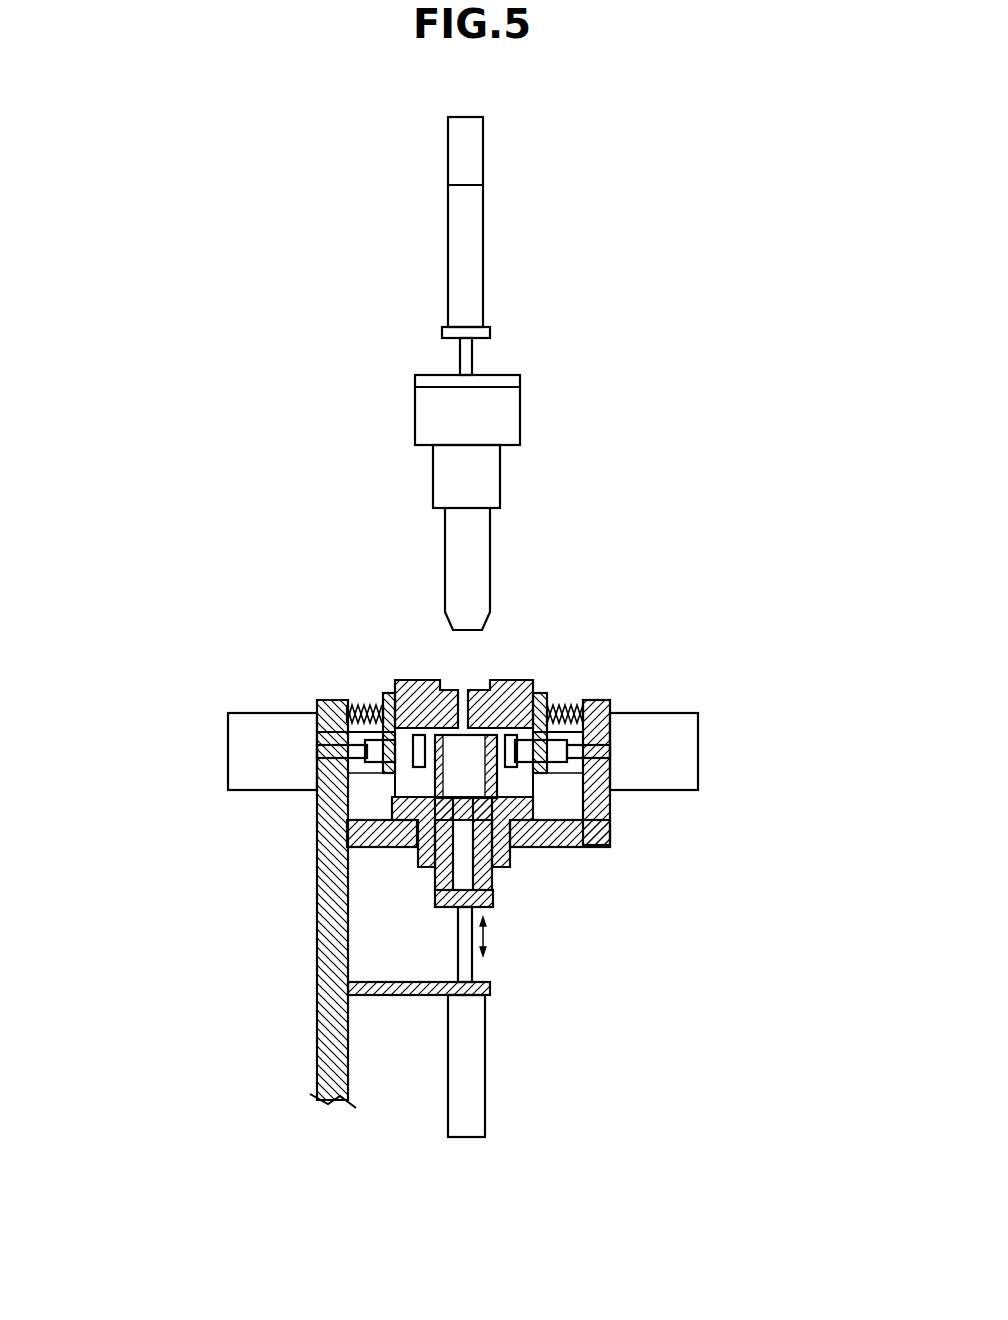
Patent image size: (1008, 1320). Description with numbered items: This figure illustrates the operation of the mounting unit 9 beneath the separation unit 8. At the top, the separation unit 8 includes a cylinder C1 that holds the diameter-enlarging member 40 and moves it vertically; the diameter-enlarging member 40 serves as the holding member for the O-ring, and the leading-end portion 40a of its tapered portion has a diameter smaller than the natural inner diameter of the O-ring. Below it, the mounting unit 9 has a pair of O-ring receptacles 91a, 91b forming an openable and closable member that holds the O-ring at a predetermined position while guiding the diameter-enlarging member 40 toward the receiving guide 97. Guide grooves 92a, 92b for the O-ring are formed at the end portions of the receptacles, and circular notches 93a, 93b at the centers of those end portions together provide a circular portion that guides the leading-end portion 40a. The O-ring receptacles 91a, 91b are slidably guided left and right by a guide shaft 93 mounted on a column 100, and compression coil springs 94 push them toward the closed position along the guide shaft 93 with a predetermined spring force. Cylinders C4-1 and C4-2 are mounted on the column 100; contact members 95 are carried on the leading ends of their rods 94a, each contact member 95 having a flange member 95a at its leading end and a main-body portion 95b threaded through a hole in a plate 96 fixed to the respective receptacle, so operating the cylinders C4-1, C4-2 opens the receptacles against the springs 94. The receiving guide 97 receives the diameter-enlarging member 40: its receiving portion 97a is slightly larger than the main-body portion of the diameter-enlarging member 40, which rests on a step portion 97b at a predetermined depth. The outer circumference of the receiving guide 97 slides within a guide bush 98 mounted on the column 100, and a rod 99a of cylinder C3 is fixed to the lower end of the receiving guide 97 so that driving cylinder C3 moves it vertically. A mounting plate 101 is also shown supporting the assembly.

The separation unit 8 is at (230, 248).
The mounting unit 9 is at (181, 594).
The diameter-enlarging member 40 is at (480, 690).
The leading-end portion 40a is at (448, 690).
The O-ring receptacle 91a is at (546, 700).
The O-ring receptacle 91b is at (393, 690).
The guide groove 92a is at (520, 700).
The guide groove 92b is at (455, 700).
The guide shaft 93 is at (716, 724).
The circular notch 93a is at (472, 690).
The circular notch 93b is at (452, 688).
The compression coil spring 94 is at (633, 682).
The rod 94a is at (678, 862).
The contact member 95 is at (666, 888).
The flange member 95a is at (503, 845).
The main-body portion 95b is at (565, 842).
The plate 96 is at (395, 838).
The receiving guide 97 is at (508, 845).
The receiving portion 97a is at (465, 700).
The step portion 97b is at (447, 793).
The guide bush 98 is at (500, 870).
The rod 99a is at (463, 935).
The column 100 is at (322, 928).
The mounting plate 101 is at (345, 1005).
The cylinder C1 is at (448, 240).
The cylinder C3 is at (462, 1050).
The cylinder C4-1 is at (655, 775).
The cylinder C4-2 is at (300, 772).